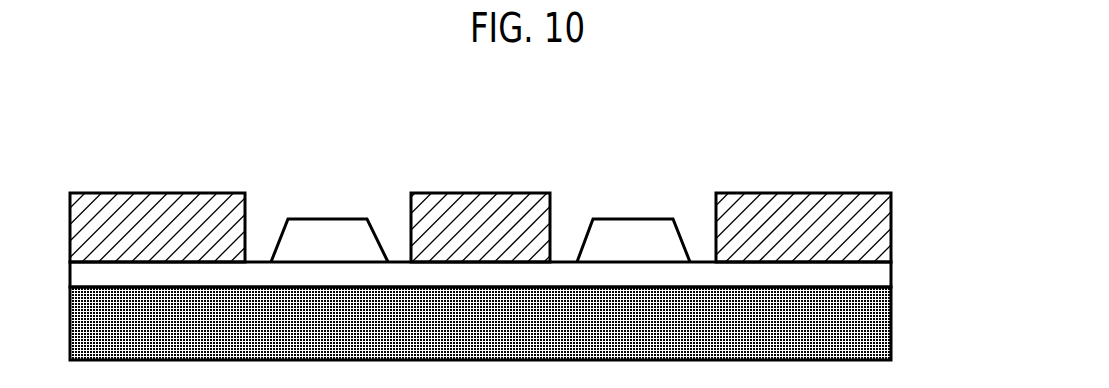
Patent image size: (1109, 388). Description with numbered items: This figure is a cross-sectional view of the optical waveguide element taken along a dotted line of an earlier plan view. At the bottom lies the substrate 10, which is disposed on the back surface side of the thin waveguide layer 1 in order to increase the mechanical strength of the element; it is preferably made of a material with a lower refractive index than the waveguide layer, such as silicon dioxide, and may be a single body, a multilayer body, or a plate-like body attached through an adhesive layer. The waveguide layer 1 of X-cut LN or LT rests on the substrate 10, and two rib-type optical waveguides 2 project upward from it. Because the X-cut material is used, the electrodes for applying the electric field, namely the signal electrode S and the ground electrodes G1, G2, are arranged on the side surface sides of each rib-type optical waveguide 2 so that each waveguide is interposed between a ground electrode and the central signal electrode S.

The substrate 10 is at (873, 340).
The waveguide layer 1 is at (872, 278).
The rib-type optical waveguide 2 is at (328, 233).
The ground electrode G1 is at (162, 213).
The signal electrode S is at (488, 213).
The ground electrode G2 is at (805, 218).